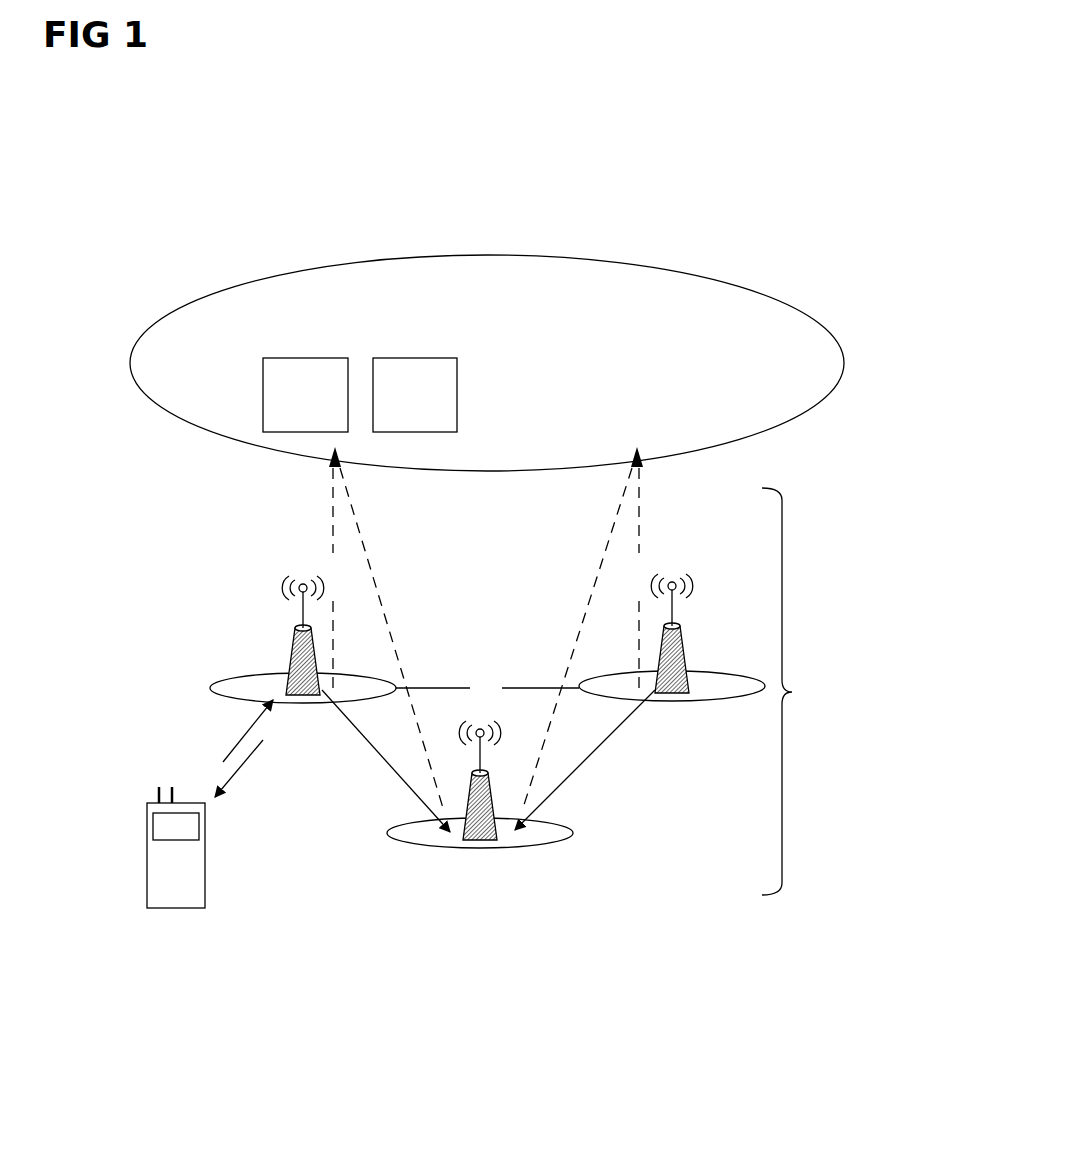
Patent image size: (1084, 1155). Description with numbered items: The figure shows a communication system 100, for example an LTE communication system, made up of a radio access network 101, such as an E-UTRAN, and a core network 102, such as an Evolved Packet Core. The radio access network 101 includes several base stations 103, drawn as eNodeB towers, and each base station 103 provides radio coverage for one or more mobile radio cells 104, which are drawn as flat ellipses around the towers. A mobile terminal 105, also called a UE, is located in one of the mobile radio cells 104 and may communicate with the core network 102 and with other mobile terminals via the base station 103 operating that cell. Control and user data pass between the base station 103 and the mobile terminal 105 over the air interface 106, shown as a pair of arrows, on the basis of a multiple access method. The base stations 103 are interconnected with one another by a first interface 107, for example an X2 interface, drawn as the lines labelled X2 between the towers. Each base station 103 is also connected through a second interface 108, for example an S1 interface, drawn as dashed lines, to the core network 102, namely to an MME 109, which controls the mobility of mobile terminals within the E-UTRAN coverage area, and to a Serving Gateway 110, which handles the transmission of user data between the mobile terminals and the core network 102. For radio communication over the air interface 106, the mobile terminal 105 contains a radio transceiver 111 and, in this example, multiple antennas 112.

The communication system 100 is at (845, 168).
The radio access network 101 is at (887, 668).
The core network 102 is at (835, 338).
The base station 103 is at (296, 636).
The mobile radio cell 104 is at (216, 693).
The mobile terminal 105 is at (176, 909).
The air interface 106 is at (267, 762).
The first interface 107 is at (478, 668).
The second interface 108 is at (333, 508).
The MME 109 is at (303, 358).
The Serving Gateway 110 is at (413, 358).
The radio transceiver 111 is at (177, 841).
The antennas 112 is at (195, 772).